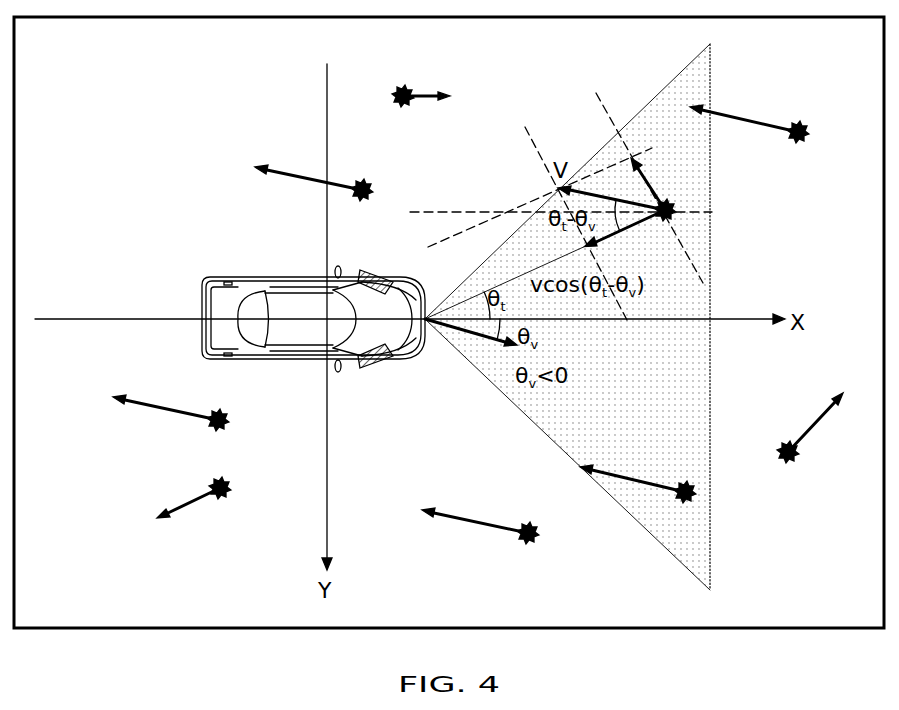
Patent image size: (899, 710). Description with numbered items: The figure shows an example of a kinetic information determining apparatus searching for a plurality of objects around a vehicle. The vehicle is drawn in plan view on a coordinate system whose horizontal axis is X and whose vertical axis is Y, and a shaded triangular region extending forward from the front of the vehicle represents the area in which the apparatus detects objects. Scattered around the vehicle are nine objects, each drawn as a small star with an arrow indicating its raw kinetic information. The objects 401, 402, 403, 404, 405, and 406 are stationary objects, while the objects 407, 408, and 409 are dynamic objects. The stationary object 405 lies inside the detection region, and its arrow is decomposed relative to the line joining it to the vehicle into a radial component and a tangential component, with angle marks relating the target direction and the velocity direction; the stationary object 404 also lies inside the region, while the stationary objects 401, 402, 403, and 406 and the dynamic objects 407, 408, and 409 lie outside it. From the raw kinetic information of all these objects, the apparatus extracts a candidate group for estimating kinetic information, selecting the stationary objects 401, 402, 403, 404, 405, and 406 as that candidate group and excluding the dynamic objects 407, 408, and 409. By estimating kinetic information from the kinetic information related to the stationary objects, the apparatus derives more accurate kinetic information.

The stationary object 401 is at (369, 180).
The stationary object 402 is at (226, 411).
The stationary object 403 is at (537, 543).
The stationary object 404 is at (694, 500).
The stationary object 405 is at (673, 203).
The stationary object 406 is at (805, 121).
The dynamic object 407 is at (228, 479).
The dynamic object 408 is at (790, 465).
The dynamic object 409 is at (405, 86).